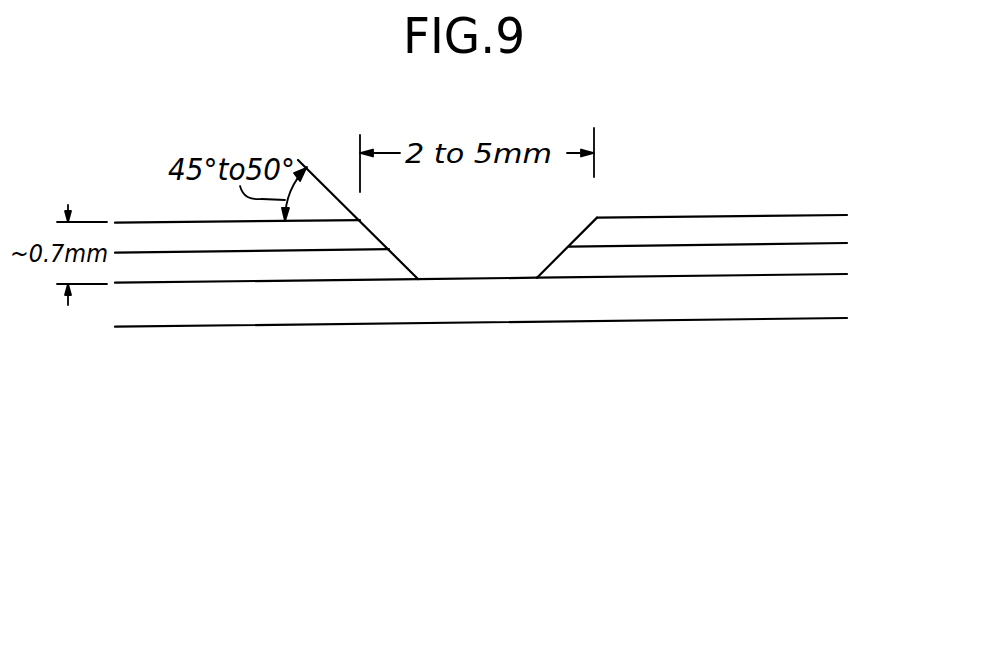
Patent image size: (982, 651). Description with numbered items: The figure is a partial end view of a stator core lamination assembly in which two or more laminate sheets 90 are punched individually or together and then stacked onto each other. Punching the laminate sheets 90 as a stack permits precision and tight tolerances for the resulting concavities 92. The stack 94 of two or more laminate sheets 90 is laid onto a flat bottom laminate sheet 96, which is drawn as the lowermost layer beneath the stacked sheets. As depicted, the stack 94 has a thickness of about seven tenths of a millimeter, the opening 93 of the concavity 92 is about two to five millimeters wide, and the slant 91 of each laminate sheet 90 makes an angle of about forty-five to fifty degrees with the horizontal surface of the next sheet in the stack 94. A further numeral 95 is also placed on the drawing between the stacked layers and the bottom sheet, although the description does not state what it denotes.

The laminate sheet 90 is at (168, 242).
The slant 91 is at (378, 238).
The concavity 92 is at (480, 263).
The opening 93 is at (545, 218).
The stack 94 is at (859, 220).
The intermediate layer 95 is at (490, 279).
The flat bottom laminate sheet 96 is at (832, 297).